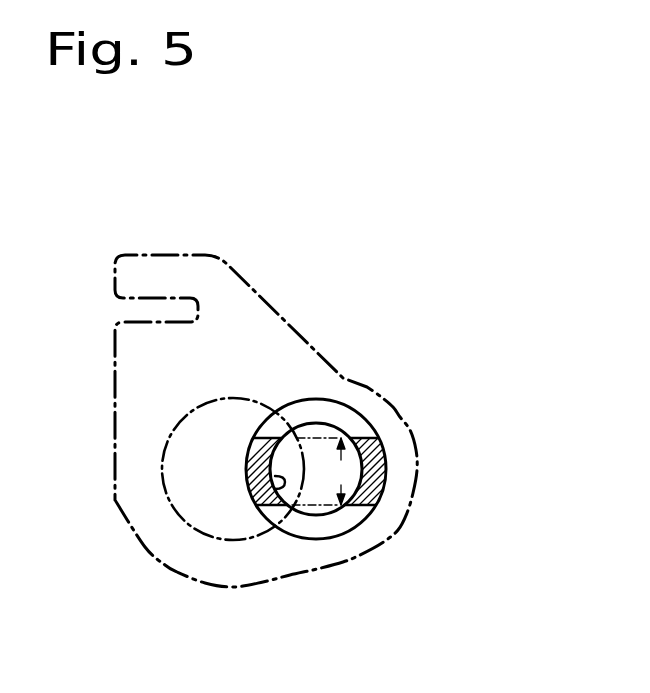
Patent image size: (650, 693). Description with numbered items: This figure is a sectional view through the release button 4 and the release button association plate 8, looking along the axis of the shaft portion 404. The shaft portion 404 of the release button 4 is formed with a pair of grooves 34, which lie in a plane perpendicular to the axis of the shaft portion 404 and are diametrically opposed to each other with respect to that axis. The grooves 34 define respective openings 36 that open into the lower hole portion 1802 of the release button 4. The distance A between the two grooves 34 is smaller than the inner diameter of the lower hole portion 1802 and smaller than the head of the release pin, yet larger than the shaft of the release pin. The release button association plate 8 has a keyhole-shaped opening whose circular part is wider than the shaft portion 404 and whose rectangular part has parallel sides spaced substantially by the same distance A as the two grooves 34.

The release button 4 is at (398, 457).
The release button association plate 8 is at (252, 322).
The grooves 34 is at (285, 417).
The openings 36 is at (334, 435).
The shaft portion 404 is at (250, 472).
The lower hole portion 1802 is at (255, 495).